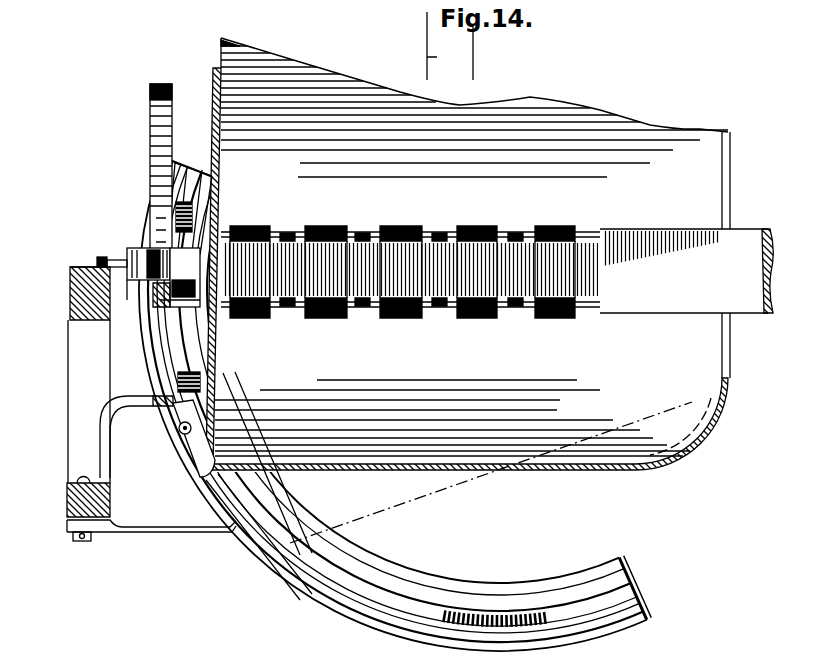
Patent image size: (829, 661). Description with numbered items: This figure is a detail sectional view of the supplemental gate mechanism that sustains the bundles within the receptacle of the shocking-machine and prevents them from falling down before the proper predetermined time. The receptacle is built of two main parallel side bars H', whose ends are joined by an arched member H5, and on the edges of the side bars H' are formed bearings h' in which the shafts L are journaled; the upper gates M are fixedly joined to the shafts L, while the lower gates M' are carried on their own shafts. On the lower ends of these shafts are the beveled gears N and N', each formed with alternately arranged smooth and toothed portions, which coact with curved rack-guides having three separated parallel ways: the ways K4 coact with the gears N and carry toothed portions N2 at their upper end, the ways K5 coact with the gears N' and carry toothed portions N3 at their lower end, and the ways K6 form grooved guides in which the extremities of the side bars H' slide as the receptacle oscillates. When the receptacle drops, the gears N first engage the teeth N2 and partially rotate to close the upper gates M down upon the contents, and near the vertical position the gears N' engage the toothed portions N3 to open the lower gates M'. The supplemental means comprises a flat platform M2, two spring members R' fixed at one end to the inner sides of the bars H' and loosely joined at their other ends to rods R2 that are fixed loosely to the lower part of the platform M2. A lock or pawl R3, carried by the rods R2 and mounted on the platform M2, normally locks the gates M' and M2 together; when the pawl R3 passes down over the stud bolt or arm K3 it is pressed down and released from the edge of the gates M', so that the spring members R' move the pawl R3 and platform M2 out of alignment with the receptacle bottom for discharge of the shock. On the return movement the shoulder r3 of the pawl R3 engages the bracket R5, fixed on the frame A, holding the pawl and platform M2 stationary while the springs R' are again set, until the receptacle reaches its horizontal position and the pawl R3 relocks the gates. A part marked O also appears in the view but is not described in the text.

The arched member H5 is at (172, 118).
The flat platform M2 is at (221, 162).
The toothed portions N2 is at (221, 188).
The beveled gears N is at (213, 206).
The shafts L is at (221, 219).
The upper gates M is at (475, 208).
The bearings h' is at (410, 255).
The parallel bars H' is at (686, 271).
The bearing block O is at (124, 250).
The beveled gears N' is at (376, 398).
The spring members R' is at (413, 383).
The lower gates M' is at (467, 399).
The rods R2 is at (180, 377).
The lock or pawl R3 is at (215, 400).
The bracket R5 is at (112, 402).
The shoulder r3 is at (168, 408).
The frame A is at (66, 497).
The stud bolt or arm K3 is at (152, 528).
The ways K4 is at (412, 590).
The toothed portions N3 is at (496, 614).
The ways K5 is at (640, 598).
The ways K6 is at (618, 626).